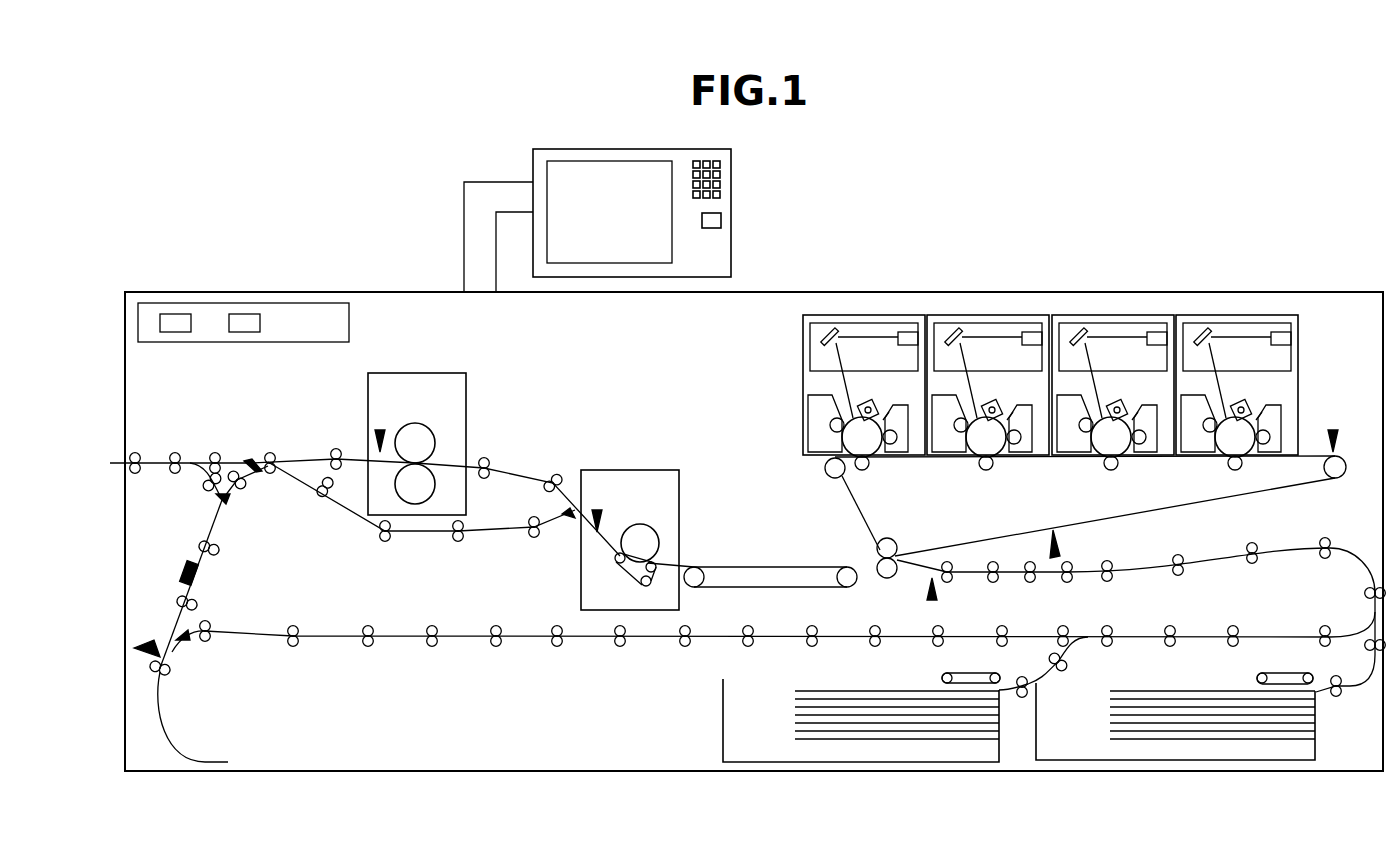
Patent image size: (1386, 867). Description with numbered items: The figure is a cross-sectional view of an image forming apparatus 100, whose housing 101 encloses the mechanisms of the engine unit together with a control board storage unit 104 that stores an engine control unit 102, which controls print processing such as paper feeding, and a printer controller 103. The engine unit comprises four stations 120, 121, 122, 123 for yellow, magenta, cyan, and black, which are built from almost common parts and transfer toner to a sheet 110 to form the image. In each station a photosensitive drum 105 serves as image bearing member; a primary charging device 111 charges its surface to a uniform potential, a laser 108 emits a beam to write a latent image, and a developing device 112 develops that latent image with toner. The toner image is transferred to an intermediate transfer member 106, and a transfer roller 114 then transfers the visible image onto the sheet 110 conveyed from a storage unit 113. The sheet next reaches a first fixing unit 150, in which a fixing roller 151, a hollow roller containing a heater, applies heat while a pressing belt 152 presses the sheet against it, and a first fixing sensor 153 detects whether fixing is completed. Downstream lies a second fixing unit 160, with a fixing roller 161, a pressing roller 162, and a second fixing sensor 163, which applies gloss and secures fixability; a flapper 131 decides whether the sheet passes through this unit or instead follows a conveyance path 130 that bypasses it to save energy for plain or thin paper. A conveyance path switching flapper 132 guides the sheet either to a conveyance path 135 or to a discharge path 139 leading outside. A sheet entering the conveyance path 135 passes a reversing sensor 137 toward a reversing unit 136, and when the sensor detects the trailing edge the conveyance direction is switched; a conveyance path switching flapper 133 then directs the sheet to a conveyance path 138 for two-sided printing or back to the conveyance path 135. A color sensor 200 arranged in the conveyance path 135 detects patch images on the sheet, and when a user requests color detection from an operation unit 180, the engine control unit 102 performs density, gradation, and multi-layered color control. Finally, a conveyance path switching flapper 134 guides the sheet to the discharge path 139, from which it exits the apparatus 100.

The image forming apparatus 100 is at (1198, 214).
The housing 101 is at (1323, 292).
The engine control unit 102 is at (177, 314).
The printer controller 103 is at (245, 314).
The control board storage unit 104 is at (308, 303).
The photosensitive drum 105 is at (870, 445).
The intermediate transfer member 106 is at (973, 548).
The laser 108 is at (905, 332).
The sheet 110 is at (836, 691).
The primary charging device 111 is at (868, 402).
The developing device 112 is at (820, 437).
The storage unit 113 is at (723, 720).
The transfer roller 114 is at (887, 578).
The station 120 is at (835, 383).
The station 121 is at (990, 315).
The station 122 is at (1114, 315).
The station 123 is at (1238, 315).
The conveyance path 130 is at (412, 533).
The flapper 131 is at (573, 529).
The conveyance path switching flapper 132 is at (255, 459).
The conveyance path switching flapper 133 is at (183, 643).
The conveyance path switching flapper 134 is at (225, 505).
The conveyance path 135 is at (207, 555).
The reversing unit 136 is at (158, 748).
The reversing sensor 137 is at (148, 646).
The conveyance path 138 is at (333, 636).
The discharge path 139 is at (157, 463).
The first fixing unit 150 is at (600, 519).
The fixing roller 151 is at (640, 524).
The pressing belt 152 is at (630, 578).
The first fixing sensor 153 is at (597, 508).
The second fixing unit 160 is at (422, 420).
The fixing roller 161 is at (432, 408).
The pressing roller 162 is at (437, 483).
The second fixing sensor 163 is at (380, 430).
The operation unit 180 is at (533, 163).
The color sensor 200 is at (186, 566).